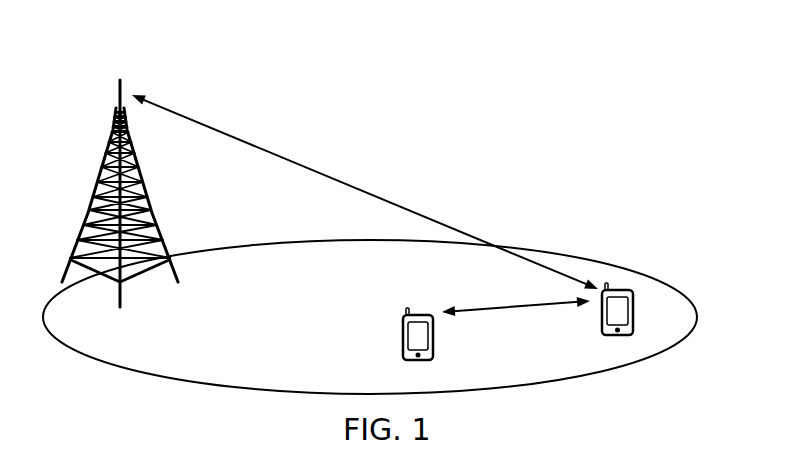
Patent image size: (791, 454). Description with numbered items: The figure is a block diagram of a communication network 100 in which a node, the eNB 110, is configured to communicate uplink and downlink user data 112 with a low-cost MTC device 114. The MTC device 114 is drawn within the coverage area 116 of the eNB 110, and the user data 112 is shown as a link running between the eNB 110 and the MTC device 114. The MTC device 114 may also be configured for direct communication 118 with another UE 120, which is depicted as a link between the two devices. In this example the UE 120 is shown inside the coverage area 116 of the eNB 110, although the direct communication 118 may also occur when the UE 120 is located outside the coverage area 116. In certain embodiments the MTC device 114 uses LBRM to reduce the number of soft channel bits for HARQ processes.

The communication network 100 is at (165, 28).
The eNB 110 is at (102, 172).
The uplink and downlink user data 112 is at (322, 173).
The low-cost MTC device 114 is at (632, 294).
The coverage area 116 is at (315, 239).
The direct communication 118 is at (503, 308).
The UE 120 is at (403, 317).